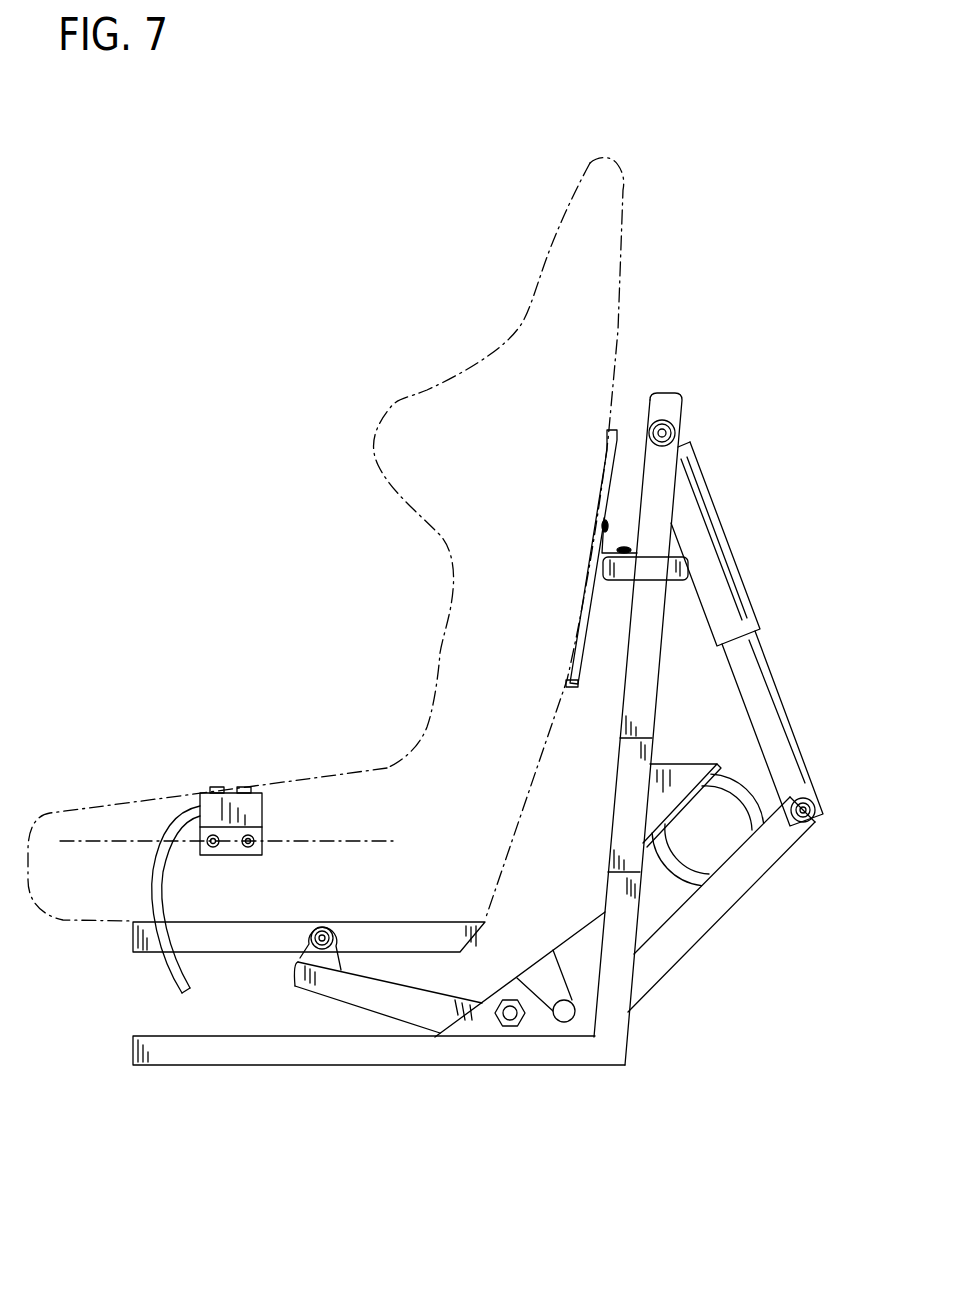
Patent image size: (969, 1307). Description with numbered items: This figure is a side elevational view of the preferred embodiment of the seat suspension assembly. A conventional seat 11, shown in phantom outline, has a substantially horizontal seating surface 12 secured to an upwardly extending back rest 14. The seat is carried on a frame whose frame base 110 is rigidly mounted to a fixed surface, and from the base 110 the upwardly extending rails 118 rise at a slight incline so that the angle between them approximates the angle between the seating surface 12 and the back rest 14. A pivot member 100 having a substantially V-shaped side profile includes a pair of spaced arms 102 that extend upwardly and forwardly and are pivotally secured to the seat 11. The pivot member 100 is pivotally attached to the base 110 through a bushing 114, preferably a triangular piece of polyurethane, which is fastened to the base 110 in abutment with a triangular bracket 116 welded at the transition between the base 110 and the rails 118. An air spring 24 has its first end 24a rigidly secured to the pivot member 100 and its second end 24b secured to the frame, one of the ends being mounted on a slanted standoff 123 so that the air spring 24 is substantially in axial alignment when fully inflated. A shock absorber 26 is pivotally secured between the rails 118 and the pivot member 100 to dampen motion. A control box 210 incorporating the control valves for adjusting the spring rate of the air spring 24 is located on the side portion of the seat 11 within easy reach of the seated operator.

The seat 11 is at (492, 717).
The seating surface 12 is at (363, 841).
The back rest 14 is at (503, 332).
The air spring 24 is at (713, 827).
The air spring first end 24a is at (720, 870).
The air spring second end 24b is at (720, 768).
The shock absorber 26 is at (707, 525).
The pivot member 100 is at (418, 1005).
The spaced arms 102 is at (317, 978).
The frame base 110 is at (565, 1055).
The bushing 114 is at (588, 952).
The triangular bracket 116 is at (590, 1015).
The upwardly extending rails 118 is at (620, 940).
The slanted standoff 123 is at (667, 773).
The control box 210 is at (212, 804).